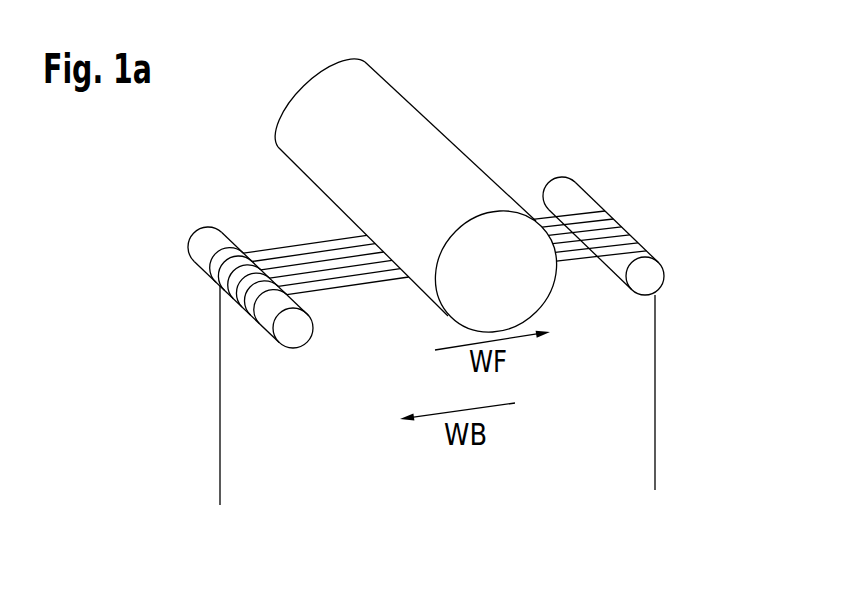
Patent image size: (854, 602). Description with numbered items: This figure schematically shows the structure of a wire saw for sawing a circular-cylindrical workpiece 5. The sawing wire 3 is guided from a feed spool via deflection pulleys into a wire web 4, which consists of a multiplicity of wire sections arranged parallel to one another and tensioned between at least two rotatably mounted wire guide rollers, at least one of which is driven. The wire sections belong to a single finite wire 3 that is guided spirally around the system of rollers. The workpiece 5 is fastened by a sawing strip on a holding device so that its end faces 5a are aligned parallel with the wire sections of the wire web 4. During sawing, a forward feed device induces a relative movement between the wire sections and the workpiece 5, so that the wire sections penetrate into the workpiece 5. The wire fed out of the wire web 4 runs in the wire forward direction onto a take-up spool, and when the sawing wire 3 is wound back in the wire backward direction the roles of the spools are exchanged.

The sawing wire 3 is at (219, 417).
The wire web 4 is at (278, 218).
The workpiece 5 is at (428, 178).
The end faces 5a is at (492, 244).